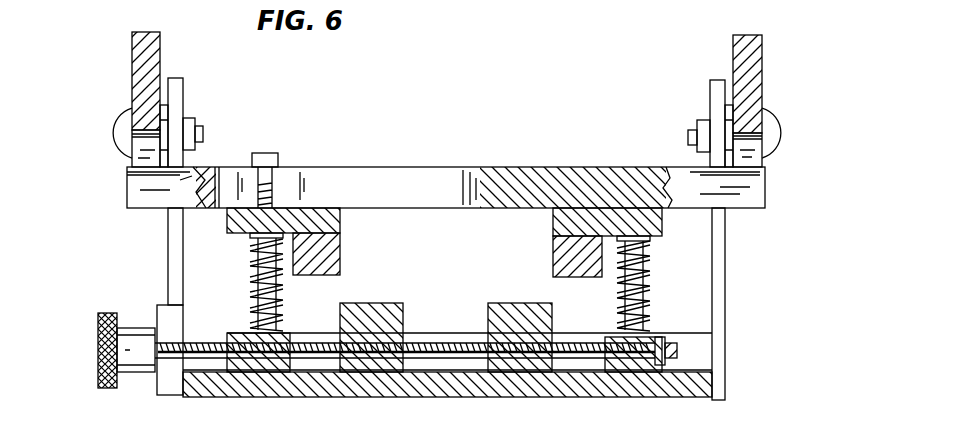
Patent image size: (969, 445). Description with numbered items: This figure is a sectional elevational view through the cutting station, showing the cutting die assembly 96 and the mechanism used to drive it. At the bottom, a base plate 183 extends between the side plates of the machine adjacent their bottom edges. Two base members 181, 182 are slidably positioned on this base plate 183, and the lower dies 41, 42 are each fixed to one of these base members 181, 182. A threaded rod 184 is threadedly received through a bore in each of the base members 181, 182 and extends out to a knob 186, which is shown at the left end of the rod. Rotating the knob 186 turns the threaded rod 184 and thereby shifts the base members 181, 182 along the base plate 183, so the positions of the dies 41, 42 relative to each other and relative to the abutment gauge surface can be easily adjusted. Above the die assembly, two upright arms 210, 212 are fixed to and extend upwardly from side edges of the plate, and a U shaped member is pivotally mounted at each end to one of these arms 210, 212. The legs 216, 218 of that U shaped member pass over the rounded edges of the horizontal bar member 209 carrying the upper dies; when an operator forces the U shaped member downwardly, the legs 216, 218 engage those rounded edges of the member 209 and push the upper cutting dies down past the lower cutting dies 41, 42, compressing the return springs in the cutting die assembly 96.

The leg 216 is at (135, 70).
The upright arm 210 is at (183, 94).
The leg 218 is at (762, 58).
The upright arm 212 is at (712, 92).
The cross beam 209 is at (752, 190).
The cutting die assembly 96 is at (740, 320).
The base plate 183 is at (430, 382).
The threaded rod 184 is at (200, 345).
The knob 186 is at (100, 377).
The base member 181 is at (257, 368).
The lower die 41 is at (375, 305).
The lower die 42 is at (515, 304).
The base member 182 is at (635, 378).